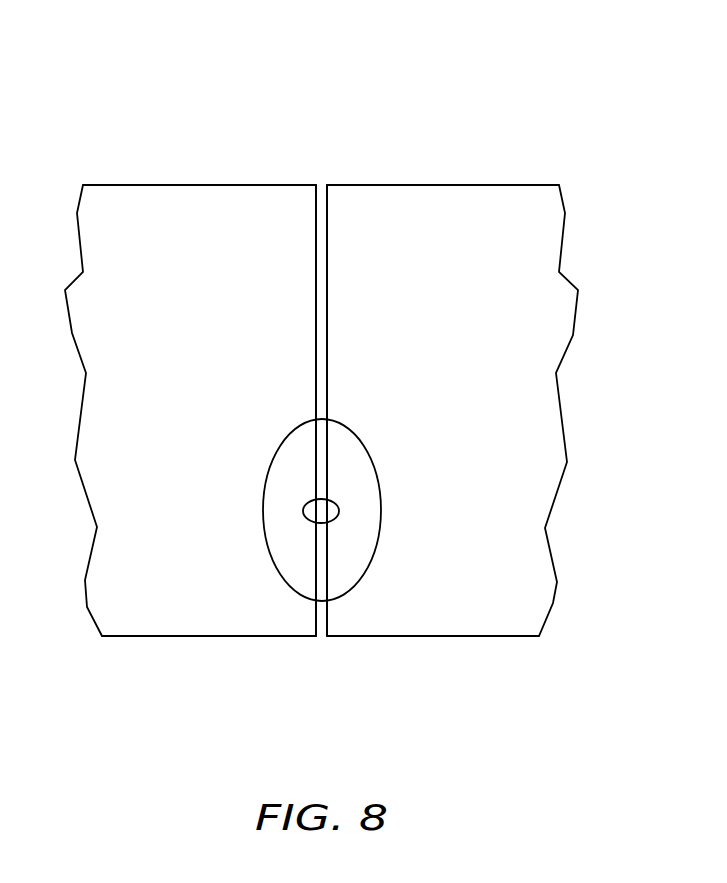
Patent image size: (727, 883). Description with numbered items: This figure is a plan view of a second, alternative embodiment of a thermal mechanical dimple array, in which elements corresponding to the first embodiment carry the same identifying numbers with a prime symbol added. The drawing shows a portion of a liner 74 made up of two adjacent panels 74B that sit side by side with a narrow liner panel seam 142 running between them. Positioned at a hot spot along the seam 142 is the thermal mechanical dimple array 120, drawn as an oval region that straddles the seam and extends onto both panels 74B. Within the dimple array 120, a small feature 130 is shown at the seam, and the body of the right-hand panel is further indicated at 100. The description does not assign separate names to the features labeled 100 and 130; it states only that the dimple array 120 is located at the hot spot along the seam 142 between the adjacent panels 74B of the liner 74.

The liner 74 is at (321, 343).
The panels 74B is at (214, 185).
The panel body 100 is at (412, 595).
The thermal mechanical dimple array 120 is at (370, 450).
The hole / fastener opening 130 is at (263, 483).
The liner panel seam 142 is at (322, 637).